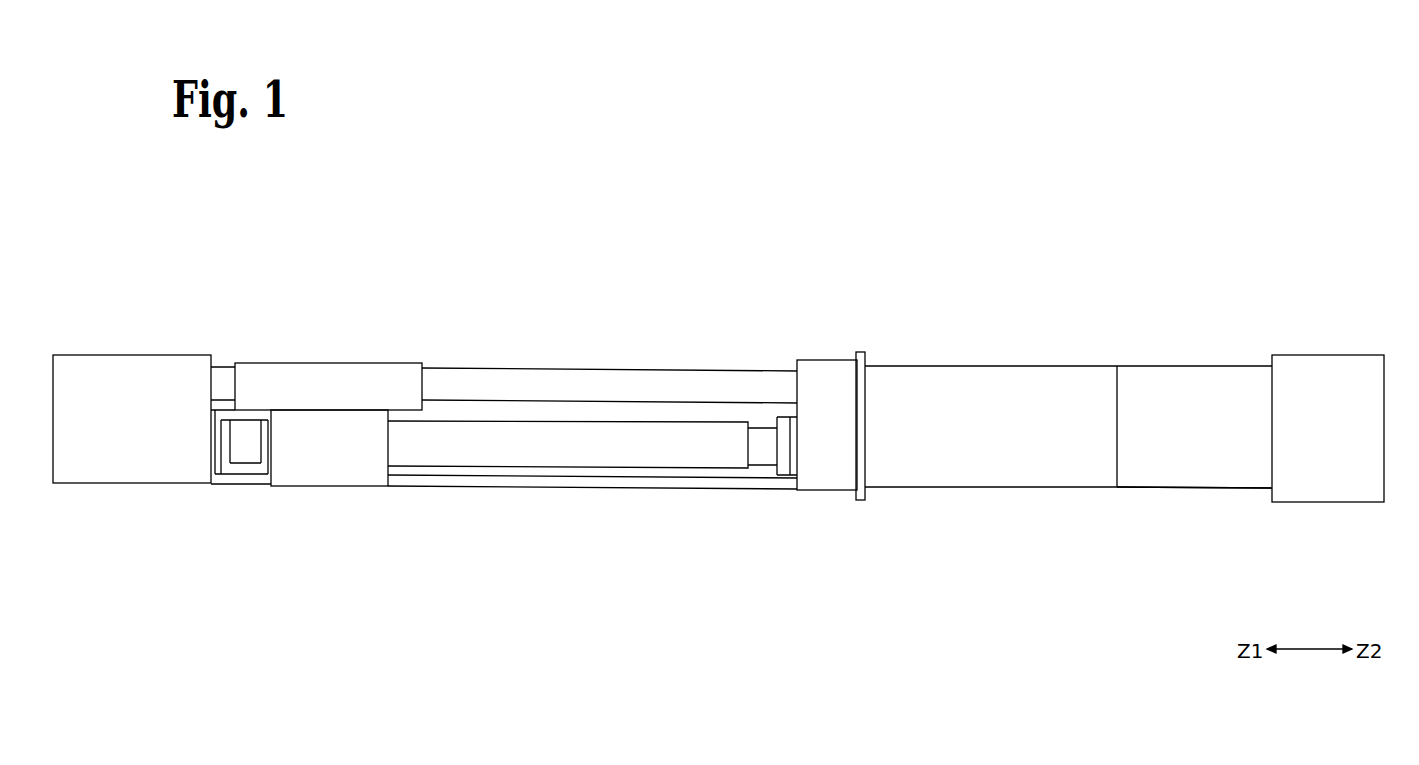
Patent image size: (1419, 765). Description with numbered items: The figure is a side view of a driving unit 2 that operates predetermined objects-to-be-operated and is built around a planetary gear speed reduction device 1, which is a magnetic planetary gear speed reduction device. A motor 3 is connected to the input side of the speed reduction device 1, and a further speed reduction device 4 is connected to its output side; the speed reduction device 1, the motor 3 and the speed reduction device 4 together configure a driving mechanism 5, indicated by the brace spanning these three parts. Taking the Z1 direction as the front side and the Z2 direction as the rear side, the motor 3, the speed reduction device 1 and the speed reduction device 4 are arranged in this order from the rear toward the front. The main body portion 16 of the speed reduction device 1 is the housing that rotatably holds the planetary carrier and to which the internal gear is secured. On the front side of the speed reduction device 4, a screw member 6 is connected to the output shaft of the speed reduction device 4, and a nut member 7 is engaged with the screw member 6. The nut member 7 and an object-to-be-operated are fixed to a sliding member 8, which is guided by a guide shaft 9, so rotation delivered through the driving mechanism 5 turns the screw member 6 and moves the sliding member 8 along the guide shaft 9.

The planetary gear speed reduction device 1 is at (1197, 366).
The driving unit 2 is at (1257, 178).
The motor 3 is at (1327, 355).
The speed reduction device 4 is at (986, 366).
The driving mechanism 5 is at (1333, 297).
The screw member 6 is at (560, 468).
The nut member 7 is at (330, 486).
The sliding member 8 is at (329, 363).
The guide shaft 9 is at (606, 368).
The main body portion 16 is at (1195, 489).